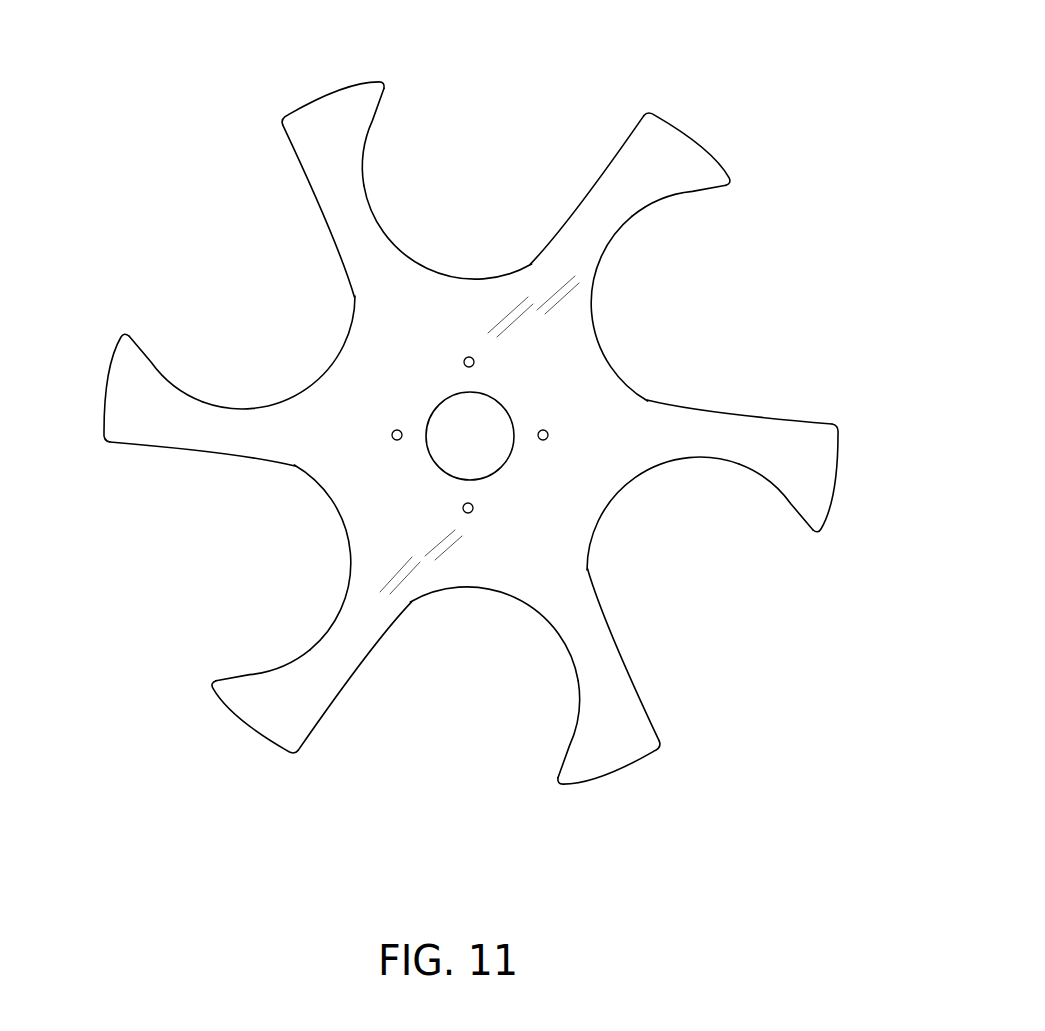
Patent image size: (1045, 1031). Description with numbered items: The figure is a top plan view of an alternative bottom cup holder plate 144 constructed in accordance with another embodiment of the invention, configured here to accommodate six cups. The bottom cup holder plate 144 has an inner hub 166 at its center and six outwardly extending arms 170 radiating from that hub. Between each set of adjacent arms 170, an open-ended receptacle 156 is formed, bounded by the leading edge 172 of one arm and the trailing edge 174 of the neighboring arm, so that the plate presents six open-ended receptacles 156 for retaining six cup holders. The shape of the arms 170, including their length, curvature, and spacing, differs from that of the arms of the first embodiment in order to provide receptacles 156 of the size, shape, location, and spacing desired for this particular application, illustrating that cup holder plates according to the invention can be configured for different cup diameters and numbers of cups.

The bottom cup holder plate 144 is at (487, 418).
The open-ended receptacle 156 is at (448, 268).
The inner hub 166 is at (436, 513).
The outwardly extending arm 170 is at (334, 74).
The leading edge 172 is at (605, 170).
The trailing edge 174 is at (365, 160).